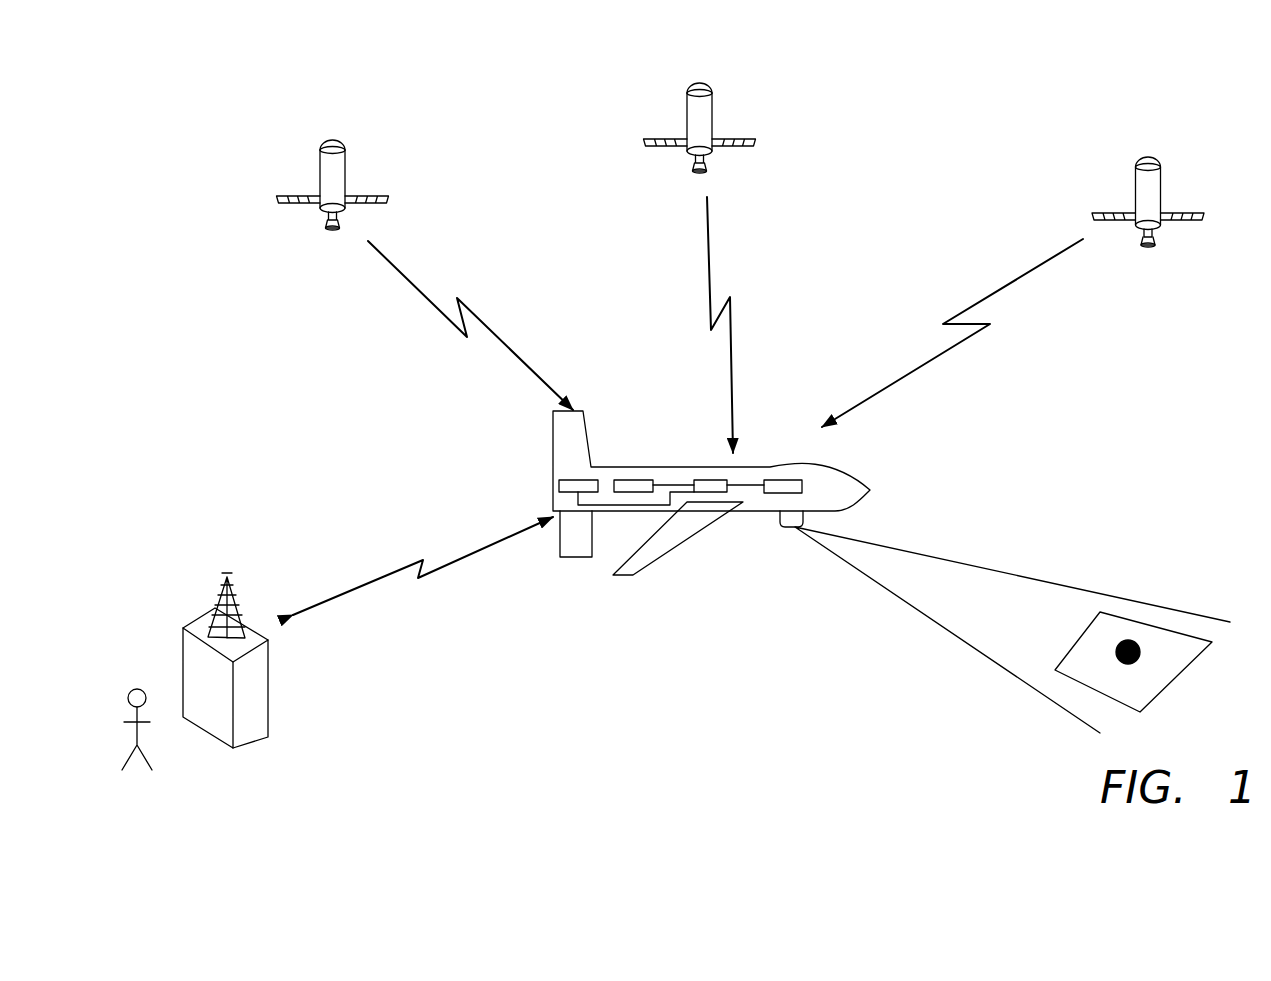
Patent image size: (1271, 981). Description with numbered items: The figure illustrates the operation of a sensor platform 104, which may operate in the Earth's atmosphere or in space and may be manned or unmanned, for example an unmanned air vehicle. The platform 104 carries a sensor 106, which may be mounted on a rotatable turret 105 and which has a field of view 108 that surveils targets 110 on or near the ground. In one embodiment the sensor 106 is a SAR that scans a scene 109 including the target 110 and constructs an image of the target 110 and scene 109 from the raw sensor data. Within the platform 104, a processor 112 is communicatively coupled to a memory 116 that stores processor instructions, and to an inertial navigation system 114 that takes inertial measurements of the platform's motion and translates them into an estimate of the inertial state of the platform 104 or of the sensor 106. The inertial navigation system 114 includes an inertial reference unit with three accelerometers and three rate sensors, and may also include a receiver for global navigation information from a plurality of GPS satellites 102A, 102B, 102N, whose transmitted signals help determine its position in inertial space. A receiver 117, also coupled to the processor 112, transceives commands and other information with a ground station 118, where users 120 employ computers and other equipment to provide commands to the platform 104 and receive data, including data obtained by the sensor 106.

The satellite 102A is at (343, 175).
The satellite 102B is at (708, 118).
The satellite 102N is at (1158, 192).
The sensor platform 104 is at (820, 477).
The rotatable turret 105 is at (778, 518).
The sensor 106 is at (793, 527).
The field of view 108 is at (1073, 583).
The scene 109 is at (1078, 680).
The target 110 is at (1128, 640).
The processor 112 is at (700, 480).
The inertial navigation system 114 is at (775, 480).
The memory 116 is at (632, 480).
The receiver 117 is at (572, 480).
The ground station 118 is at (270, 707).
The users 120 is at (165, 745).